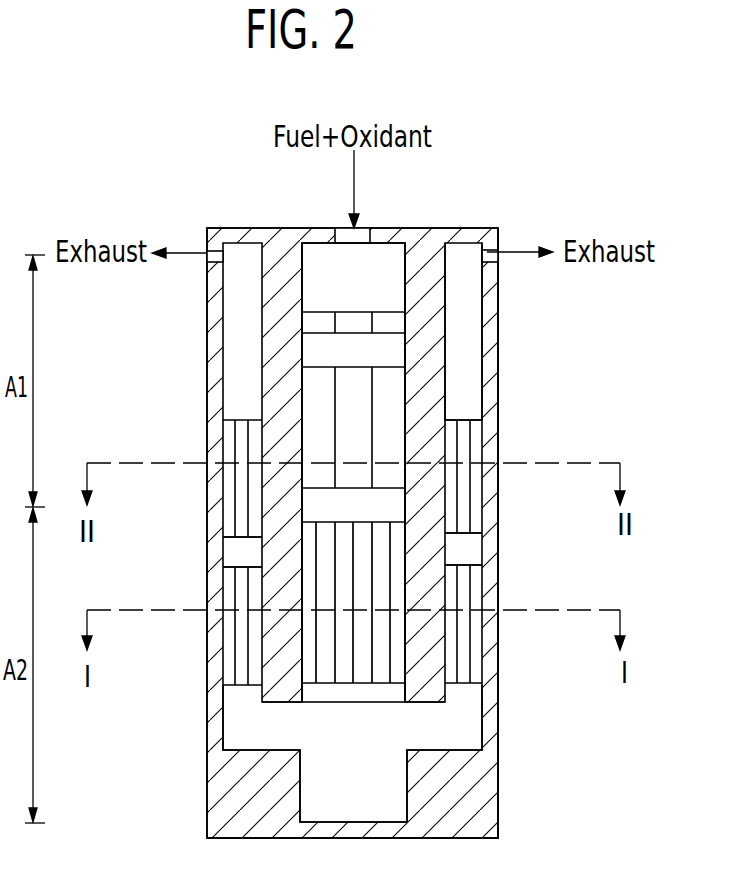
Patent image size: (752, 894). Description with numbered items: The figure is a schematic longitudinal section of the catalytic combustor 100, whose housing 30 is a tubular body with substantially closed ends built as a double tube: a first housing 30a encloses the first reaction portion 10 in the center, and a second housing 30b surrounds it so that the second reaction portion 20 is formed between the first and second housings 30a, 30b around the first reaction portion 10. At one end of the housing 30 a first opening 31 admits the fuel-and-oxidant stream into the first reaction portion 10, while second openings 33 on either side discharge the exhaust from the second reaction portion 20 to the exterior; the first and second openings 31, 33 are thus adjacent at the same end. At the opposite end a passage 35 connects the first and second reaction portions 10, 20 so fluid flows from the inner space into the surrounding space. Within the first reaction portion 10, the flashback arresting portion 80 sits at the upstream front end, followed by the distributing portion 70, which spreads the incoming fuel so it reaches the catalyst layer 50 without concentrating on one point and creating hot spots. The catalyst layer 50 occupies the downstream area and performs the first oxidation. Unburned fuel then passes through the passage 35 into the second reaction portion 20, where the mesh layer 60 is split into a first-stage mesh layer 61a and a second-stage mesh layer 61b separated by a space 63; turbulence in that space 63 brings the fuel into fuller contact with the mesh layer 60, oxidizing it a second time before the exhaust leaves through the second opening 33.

The catalytic combustor 100 is at (165, 158).
The first reaction portion 10 is at (392, 266).
The second reaction portion 20 is at (470, 312).
The housing 30 is at (492, 228).
The first housing 30a is at (425, 600).
The second housing 30b is at (490, 650).
The first opening 31 is at (365, 236).
The second opening 33 is at (207, 258).
The passage 35 is at (430, 725).
The catalyst layer 50 is at (403, 537).
The mesh layer 60 is at (477, 432).
The first-stage mesh layer 61a is at (234, 630).
The second-stage mesh layer 61b is at (236, 492).
The space 63 is at (462, 550).
The distributing portion 70 is at (410, 386).
The flashback arresting portion 80 is at (290, 327).